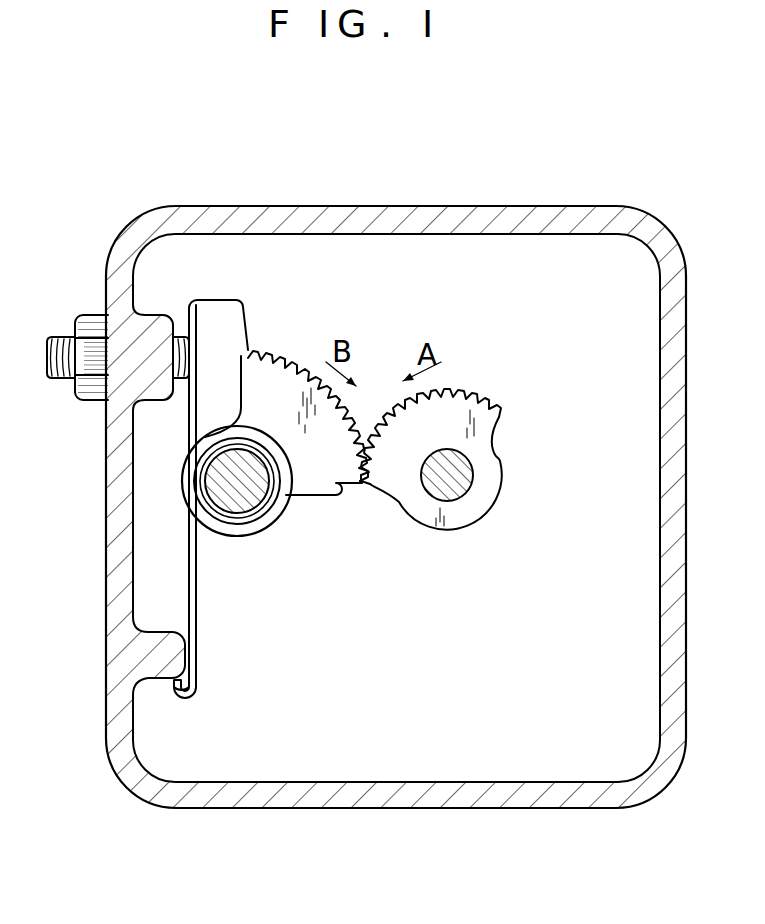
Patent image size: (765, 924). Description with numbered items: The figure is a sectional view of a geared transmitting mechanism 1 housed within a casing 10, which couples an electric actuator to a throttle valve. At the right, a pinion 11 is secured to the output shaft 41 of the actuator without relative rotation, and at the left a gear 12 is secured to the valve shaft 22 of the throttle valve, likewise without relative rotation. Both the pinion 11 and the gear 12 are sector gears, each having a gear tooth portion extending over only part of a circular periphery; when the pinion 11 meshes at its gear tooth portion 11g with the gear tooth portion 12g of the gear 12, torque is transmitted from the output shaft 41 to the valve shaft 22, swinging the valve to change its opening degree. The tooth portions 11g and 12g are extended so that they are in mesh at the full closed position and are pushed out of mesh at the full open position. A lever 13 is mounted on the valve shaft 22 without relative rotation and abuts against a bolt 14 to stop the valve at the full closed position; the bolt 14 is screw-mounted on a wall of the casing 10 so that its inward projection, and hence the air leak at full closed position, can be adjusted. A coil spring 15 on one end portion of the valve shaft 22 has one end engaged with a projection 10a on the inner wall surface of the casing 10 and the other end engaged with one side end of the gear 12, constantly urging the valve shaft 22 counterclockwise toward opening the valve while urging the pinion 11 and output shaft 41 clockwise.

The geared transmitting mechanism 1 is at (401, 620).
The casing 10 is at (239, 807).
The projection 10a is at (160, 660).
The pinion 11 is at (487, 419).
The gear tooth portion 11g is at (508, 414).
The gear 12 is at (291, 376).
The gear tooth portion 12g is at (279, 338).
The lever 13 is at (220, 308).
The bolt 14 is at (50, 336).
The coil spring 15 is at (197, 597).
The valve shaft 22 is at (242, 503).
The output shaft 41 is at (462, 492).